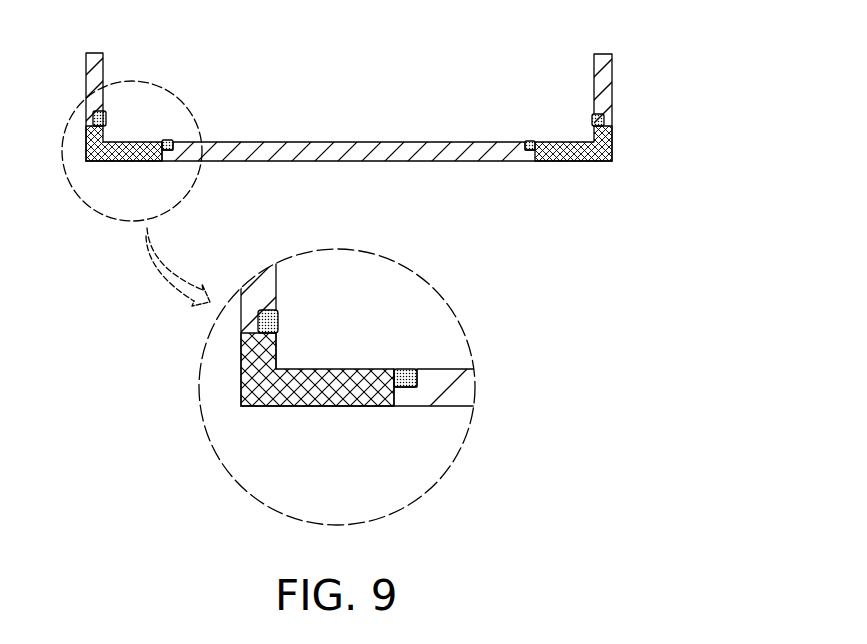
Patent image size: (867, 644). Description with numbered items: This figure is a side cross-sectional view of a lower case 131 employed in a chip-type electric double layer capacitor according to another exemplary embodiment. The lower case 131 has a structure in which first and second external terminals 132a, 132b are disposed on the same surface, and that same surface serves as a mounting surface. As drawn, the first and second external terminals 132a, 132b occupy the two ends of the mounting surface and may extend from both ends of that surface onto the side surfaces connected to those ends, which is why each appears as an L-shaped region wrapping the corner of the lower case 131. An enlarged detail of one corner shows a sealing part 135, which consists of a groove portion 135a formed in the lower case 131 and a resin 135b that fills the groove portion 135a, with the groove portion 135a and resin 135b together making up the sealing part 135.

The lower case 131 is at (612, 87).
The first external terminal 132a is at (333, 400).
The second external terminal 132b is at (577, 163).
The sealing part 135 is at (427, 307).
The groove portion 135a is at (412, 368).
The resin 135b is at (397, 368).